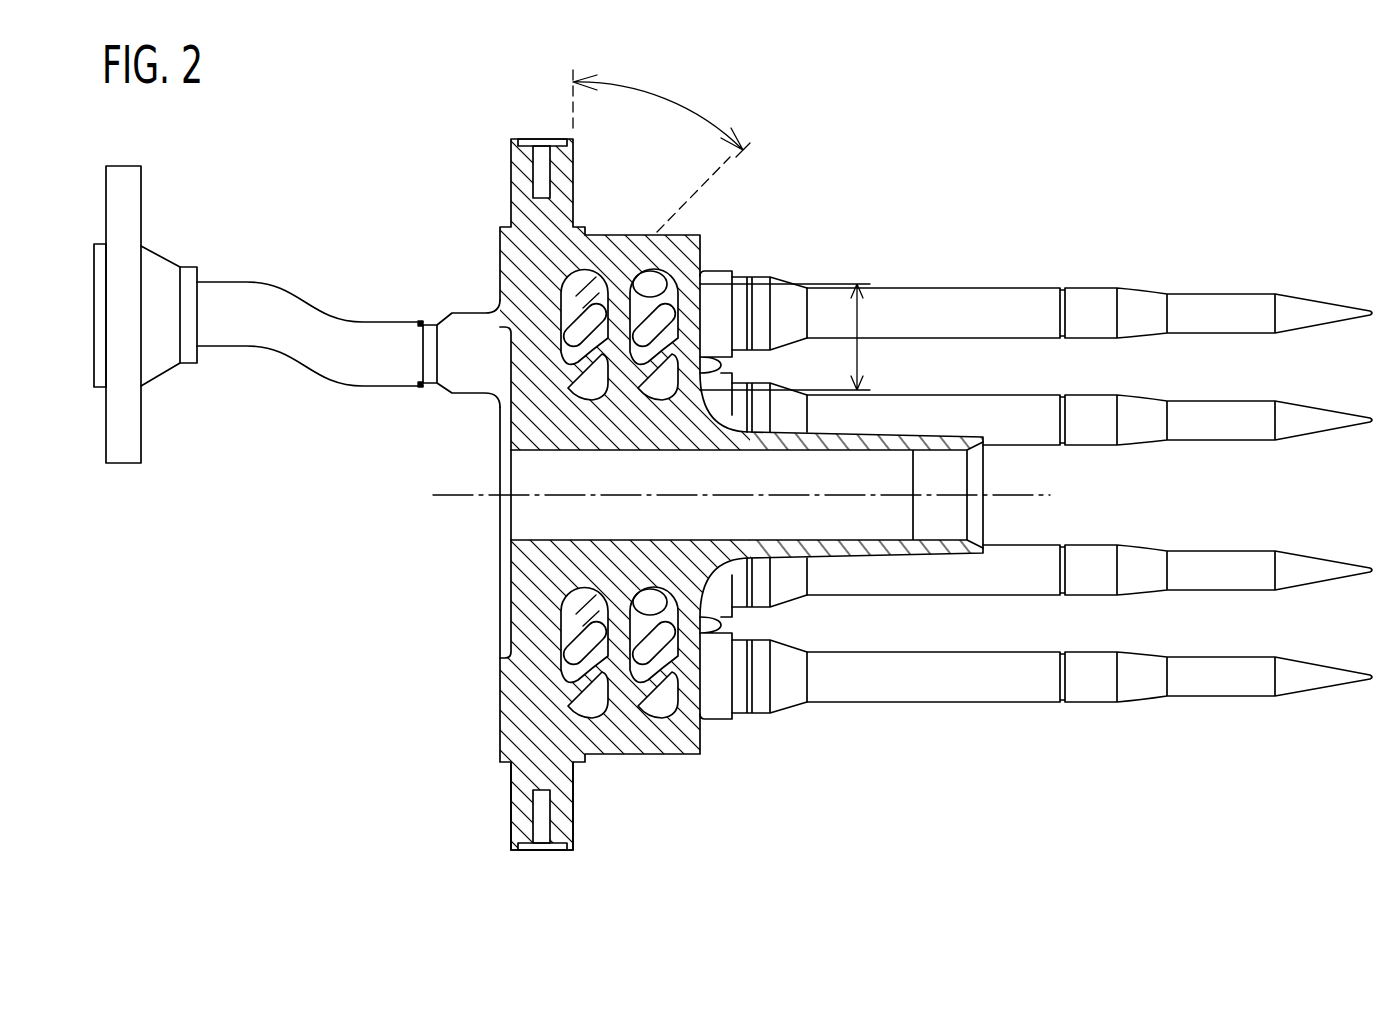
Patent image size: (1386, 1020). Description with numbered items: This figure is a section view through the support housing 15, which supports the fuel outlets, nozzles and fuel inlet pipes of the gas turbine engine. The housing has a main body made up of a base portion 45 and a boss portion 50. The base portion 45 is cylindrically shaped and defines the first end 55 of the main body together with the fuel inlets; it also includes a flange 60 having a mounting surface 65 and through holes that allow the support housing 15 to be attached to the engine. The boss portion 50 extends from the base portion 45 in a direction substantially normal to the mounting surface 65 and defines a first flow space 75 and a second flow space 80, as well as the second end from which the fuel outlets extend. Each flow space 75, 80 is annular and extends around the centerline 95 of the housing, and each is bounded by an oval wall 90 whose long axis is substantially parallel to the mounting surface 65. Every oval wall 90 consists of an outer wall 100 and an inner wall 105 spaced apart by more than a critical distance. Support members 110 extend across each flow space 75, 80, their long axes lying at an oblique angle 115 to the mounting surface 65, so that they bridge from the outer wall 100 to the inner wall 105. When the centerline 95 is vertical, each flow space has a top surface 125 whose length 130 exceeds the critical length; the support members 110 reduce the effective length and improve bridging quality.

The support housing 15 is at (478, 208).
The base portion 45 is at (543, 782).
The boss portion 50 is at (652, 735).
The first end 55 is at (500, 675).
The flange 60 is at (542, 139).
The mounting surface 65 is at (573, 812).
The first flow space 75 is at (590, 390).
The second flow space 80 is at (668, 293).
The oval wall 90 is at (598, 608).
The centerline 95 is at (460, 494).
The outer wall 100 is at (705, 725).
The inner wall 105 is at (636, 589).
The support member 110 is at (577, 313).
The oblique angle 115 is at (663, 97).
The top surface 125 is at (673, 398).
The length 130 is at (857, 353).